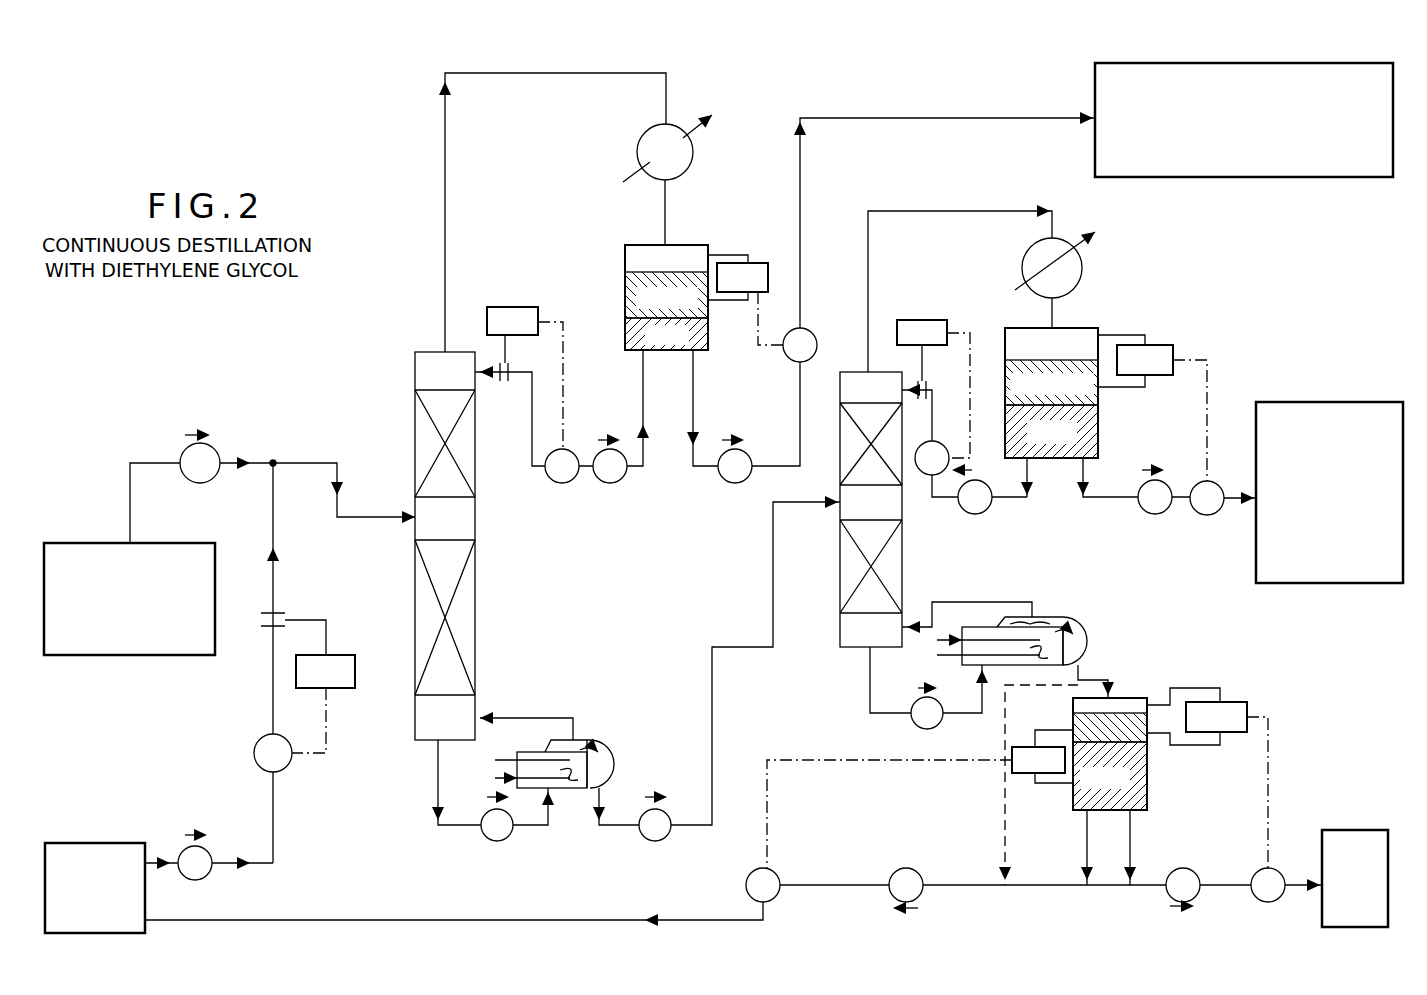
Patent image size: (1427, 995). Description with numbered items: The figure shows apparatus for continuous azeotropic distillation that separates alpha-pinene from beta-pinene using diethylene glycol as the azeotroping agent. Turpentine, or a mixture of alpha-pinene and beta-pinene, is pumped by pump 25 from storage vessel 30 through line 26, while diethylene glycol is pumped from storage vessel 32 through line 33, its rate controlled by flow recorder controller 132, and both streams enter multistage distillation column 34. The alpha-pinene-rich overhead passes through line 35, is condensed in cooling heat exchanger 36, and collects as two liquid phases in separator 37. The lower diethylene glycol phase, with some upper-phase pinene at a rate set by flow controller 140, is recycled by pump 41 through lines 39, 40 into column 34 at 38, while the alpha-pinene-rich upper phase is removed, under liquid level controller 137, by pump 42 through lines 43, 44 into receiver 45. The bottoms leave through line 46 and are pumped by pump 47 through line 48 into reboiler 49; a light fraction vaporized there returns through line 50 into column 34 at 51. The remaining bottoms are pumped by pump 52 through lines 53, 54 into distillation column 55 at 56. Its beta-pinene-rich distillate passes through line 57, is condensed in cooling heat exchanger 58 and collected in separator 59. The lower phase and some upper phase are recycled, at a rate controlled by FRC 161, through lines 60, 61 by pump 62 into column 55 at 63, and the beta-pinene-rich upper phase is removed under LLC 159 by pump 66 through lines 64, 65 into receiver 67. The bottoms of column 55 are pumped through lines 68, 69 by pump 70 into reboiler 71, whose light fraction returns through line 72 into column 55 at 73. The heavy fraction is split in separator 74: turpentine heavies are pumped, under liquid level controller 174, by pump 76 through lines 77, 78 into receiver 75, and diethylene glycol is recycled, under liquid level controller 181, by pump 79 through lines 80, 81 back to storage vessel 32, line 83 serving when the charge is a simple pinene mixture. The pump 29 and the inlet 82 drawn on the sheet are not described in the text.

The pump 25 is at (185, 450).
The line 26 is at (282, 458).
The DEG feed pump 29 is at (188, 872).
The storage vessel 30 is at (122, 655).
The storage vessel 32 is at (93, 848).
The line 33 is at (275, 808).
The multistage distillation column 34 is at (475, 622).
The line 35 is at (505, 73).
The cooling heat exchanger 36 is at (637, 152).
The separator 37 is at (632, 245).
The reflux inlet point 38 is at (460, 372).
The line 39 is at (643, 392).
The line 40 is at (532, 428).
The pump 41 is at (605, 483).
The pump 42 is at (728, 483).
The line 43 is at (693, 410).
The line 44 is at (800, 445).
The receiver 45 is at (1323, 178).
The line 46 is at (438, 792).
The pump 47 is at (485, 812).
The line 48 is at (535, 828).
The reboiler 49 is at (614, 760).
The line 50 is at (540, 718).
The reboiler return point 51 is at (470, 712).
The pump 52 is at (668, 833).
The line 53 is at (615, 830).
The line 54 is at (773, 583).
The distillation column 55 is at (902, 558).
The feed inlet point 56 is at (845, 510).
The line 57 is at (935, 211).
The cooling heat exchanger 58 is at (1022, 262).
The separator 59 is at (1098, 422).
The line 60 is at (1017, 500).
The line 61 is at (943, 500).
The pump 62 is at (973, 515).
The reflux inlet point 63 is at (884, 372).
The line 64 is at (1120, 500).
The line 65 is at (1232, 510).
The pump 66 is at (1155, 515).
The receiver 67 is at (1331, 583).
The line 68 is at (870, 680).
The line 69 is at (958, 712).
The pump 70 is at (912, 722).
The reboiler 71 is at (1065, 617).
The line 72 is at (1003, 602).
The reboiler return point 73 is at (898, 622).
The separator 74 is at (1147, 787).
The receiver 75 is at (1345, 835).
The pump 76 is at (1180, 867).
The line 77 is at (1128, 868).
The line 78 is at (1302, 870).
The pump 79 is at (906, 868).
The line 80 is at (962, 888).
The line 81 is at (380, 920).
The feed inlet of first column 82 is at (415, 515).
The line 83 is at (1005, 798).
The flow recorder controller 132 is at (345, 655).
The liquid level controller 137 is at (754, 263).
The flow controller 140 is at (502, 300).
The liquid level controller 159 is at (1168, 350).
The flow recorder controller 161 is at (912, 320).
The liquid level controller 174 is at (1246, 702).
The liquid level controller 181 is at (1030, 778).